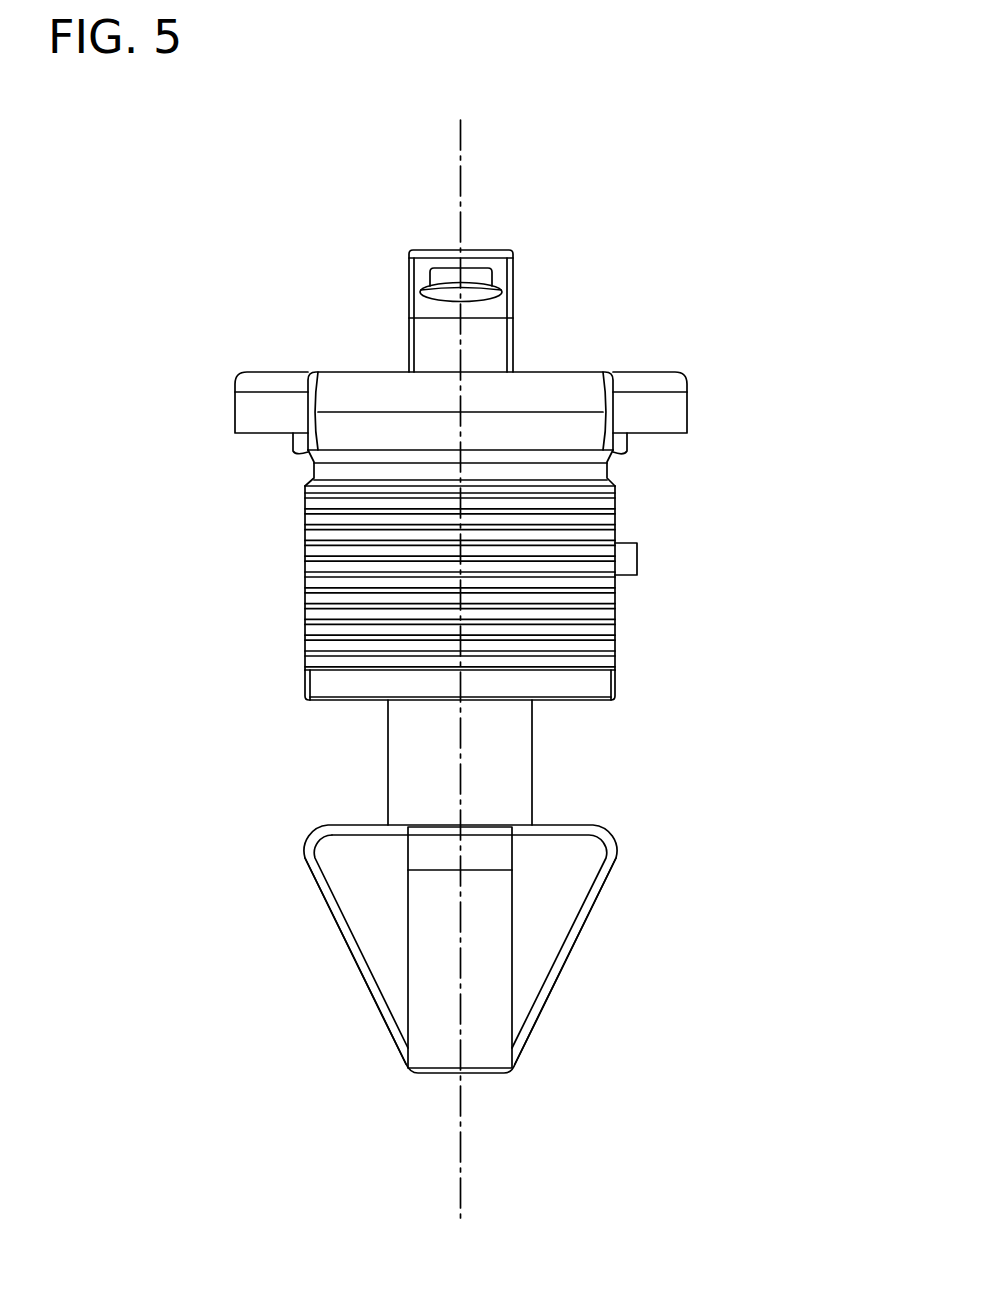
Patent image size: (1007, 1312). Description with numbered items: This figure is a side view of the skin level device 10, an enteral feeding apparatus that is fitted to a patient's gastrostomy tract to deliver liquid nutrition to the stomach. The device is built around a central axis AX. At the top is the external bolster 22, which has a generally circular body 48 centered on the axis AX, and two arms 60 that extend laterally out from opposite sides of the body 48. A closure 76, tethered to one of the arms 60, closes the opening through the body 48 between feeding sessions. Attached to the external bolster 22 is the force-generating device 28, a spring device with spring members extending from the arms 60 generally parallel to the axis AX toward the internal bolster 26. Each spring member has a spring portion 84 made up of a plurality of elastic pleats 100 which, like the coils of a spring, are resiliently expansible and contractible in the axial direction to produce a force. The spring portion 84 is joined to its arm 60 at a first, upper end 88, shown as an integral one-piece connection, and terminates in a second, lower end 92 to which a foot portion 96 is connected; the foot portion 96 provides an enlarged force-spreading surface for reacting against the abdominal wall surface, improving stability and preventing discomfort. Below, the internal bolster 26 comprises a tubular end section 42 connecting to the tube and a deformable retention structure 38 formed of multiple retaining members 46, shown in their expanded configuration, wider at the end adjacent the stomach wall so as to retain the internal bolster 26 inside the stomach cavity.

The skin level device 10 is at (770, 137).
The external bolster 22 is at (654, 362).
The internal bolster 26 is at (693, 817).
The force-generating device 28 is at (627, 513).
The deformable retention structure 38 is at (293, 820).
The tubular end section 42 is at (388, 755).
The retaining members 46 is at (370, 1012).
The circular body 48 is at (308, 371).
The arms 60 is at (553, 378).
The closure 76 is at (513, 270).
The spring portion 84 is at (305, 588).
The first end 88 is at (298, 444).
The second end 92 is at (615, 656).
The foot portion 96 is at (574, 694).
The pleats 100 is at (637, 560).
The axis AX is at (461, 1180).